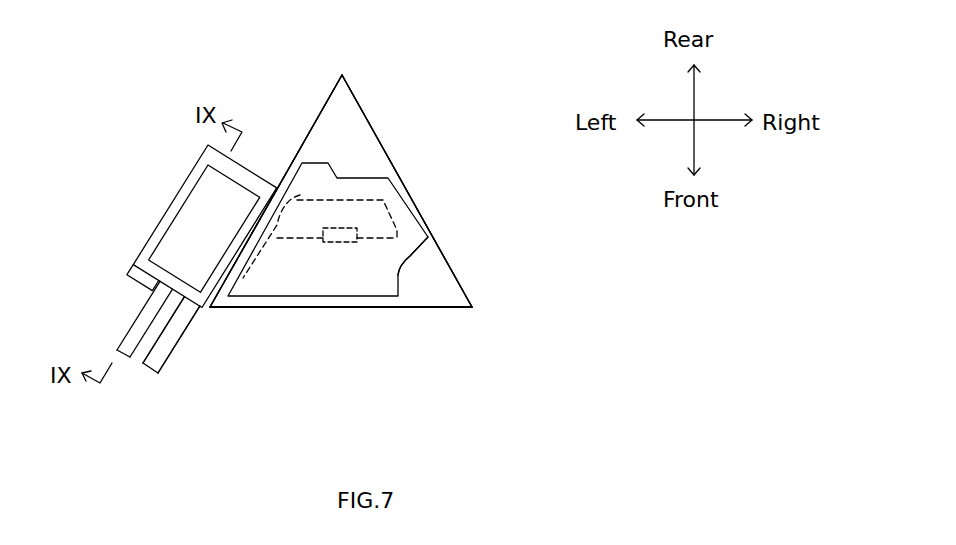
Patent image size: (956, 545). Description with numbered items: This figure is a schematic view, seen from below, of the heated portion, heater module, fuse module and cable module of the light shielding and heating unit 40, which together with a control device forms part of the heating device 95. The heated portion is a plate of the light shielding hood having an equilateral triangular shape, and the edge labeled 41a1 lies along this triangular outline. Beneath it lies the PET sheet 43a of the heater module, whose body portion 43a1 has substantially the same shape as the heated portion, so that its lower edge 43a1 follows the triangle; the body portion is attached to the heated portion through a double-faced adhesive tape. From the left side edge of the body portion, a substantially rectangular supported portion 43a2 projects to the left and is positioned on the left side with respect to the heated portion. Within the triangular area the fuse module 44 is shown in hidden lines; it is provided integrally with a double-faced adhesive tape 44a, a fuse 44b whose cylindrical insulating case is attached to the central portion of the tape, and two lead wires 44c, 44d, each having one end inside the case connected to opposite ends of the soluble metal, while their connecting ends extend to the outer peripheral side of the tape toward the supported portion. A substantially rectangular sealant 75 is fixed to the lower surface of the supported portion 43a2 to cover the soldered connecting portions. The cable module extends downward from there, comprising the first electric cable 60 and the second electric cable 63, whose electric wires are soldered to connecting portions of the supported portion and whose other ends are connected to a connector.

The light shielding and heating unit 40 is at (467, 187).
The heating device 95 is at (341, 191).
The first edge portion 41a1 is at (278, 187).
The body portion 43a1 is at (408, 300).
The PET sheet 43a is at (466, 299).
The supported portion 43a2 is at (202, 160).
The fuse module 44 is at (428, 237).
The double-faced adhesive tape 44a is at (425, 243).
The fuse 44b is at (277, 238).
The lead wire 44c is at (290, 206).
The lead wire 44d is at (326, 241).
The sealant 75 is at (141, 257).
The first electric cable 60 is at (131, 320).
The second electric cable 63 is at (167, 343).